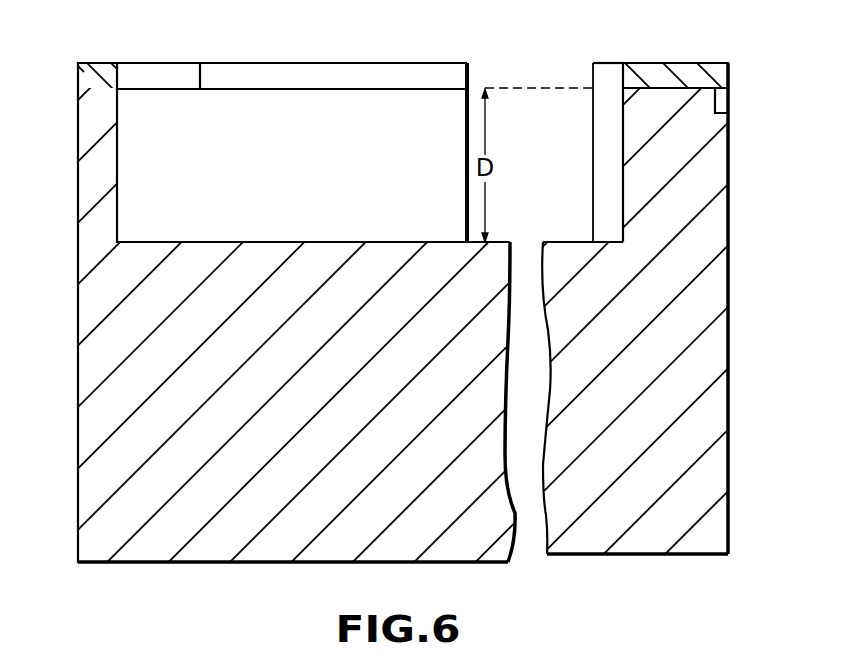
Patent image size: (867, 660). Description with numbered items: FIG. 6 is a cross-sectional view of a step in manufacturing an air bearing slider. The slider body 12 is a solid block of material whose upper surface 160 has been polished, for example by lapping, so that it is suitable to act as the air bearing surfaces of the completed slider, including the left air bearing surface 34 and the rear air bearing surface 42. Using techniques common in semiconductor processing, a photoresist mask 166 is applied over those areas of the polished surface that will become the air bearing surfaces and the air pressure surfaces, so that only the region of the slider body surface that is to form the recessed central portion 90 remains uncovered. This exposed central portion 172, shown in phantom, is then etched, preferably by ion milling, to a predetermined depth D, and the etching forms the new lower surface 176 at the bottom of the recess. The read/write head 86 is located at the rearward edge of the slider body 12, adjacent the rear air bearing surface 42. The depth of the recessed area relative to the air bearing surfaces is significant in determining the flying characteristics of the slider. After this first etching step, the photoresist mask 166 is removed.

The slider body 12 is at (85, 487).
The left air bearing surface 34 is at (142, 63).
The upper surface 160 is at (323, 89).
The photoresist mask 166 is at (395, 70).
The surface 176 is at (315, 242).
The rear air bearing surface 42 is at (693, 65).
The read/write head 86 is at (725, 100).
The recessed central portion 90 is at (515, 58).
The exposed central portion 172 is at (567, 88).